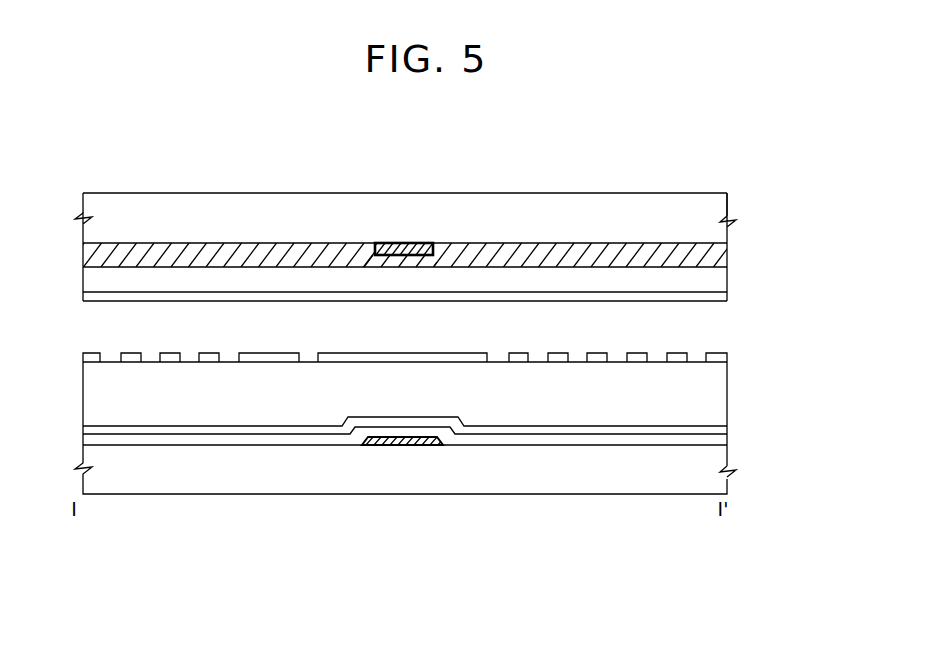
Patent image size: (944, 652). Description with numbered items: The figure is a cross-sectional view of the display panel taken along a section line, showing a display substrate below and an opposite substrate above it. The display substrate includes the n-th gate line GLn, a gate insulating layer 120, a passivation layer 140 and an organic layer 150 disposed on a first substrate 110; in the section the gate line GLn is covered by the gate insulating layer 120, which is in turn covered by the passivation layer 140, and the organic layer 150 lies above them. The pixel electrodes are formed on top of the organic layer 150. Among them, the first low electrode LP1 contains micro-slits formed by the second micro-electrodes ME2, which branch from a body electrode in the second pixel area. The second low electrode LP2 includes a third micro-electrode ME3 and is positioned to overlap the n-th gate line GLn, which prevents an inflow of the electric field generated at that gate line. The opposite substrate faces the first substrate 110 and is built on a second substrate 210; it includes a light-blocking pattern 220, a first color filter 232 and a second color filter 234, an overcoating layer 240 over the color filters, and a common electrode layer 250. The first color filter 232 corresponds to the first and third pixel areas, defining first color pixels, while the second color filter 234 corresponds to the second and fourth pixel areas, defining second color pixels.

The second substrate 210 is at (242, 207).
The first color filter 232 is at (307, 247).
The light-blocking pattern 220 is at (401, 250).
The second color filter 234 is at (479, 247).
The overcoating layer 240 is at (555, 276).
The common electrode layer 250 is at (612, 300).
The first substrate 110 is at (478, 472).
The gate insulating layer 120 is at (527, 443).
The passivation layer 140 is at (577, 430).
The organic layer 150 is at (625, 408).
The n-th gate line GLn is at (403, 442).
The second micro-electrodes ME2 is at (128, 357).
The third micro-electrode ME3 is at (522, 357).
The first low electrode LP1 is at (248, 357).
The second low electrode LP2 is at (380, 357).